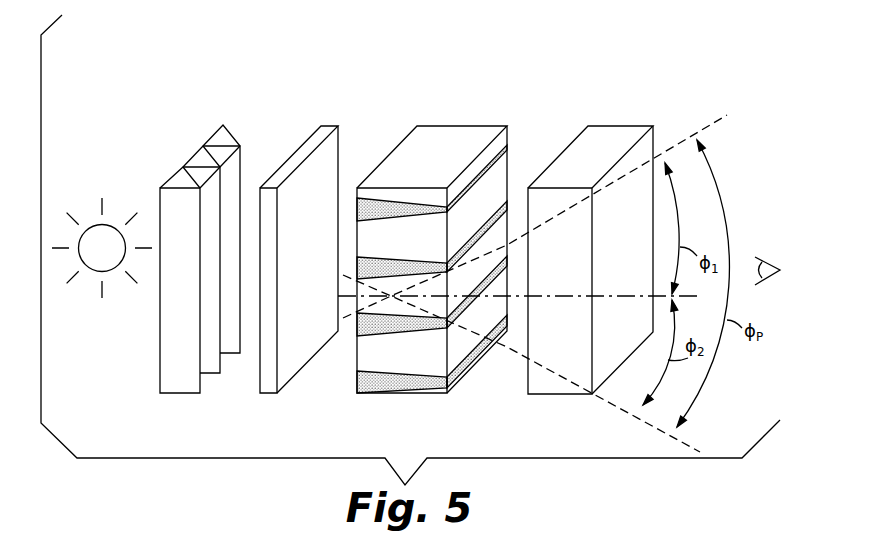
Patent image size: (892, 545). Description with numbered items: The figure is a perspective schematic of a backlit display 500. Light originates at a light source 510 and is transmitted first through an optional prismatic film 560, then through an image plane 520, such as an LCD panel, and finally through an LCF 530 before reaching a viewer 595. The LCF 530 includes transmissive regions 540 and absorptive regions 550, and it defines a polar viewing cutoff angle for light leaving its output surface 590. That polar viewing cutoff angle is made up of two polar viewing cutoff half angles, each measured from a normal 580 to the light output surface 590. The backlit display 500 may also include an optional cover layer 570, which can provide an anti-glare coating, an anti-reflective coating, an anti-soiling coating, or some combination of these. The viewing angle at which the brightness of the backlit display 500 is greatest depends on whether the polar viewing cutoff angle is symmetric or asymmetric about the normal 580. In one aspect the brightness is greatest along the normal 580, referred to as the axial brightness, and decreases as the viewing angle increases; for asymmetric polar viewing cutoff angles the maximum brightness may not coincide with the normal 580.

The backlit display 500 is at (235, 67).
The light source 510 is at (98, 238).
The prismatic film 560 is at (217, 137).
The image plane 520 is at (312, 143).
The LCF 530 is at (452, 265).
The transmissive regions 540 is at (417, 362).
The absorptive regions 550 is at (382, 333).
The output surface 590 is at (500, 181).
The cover layer 570 is at (590, 260).
The normal 580 is at (557, 297).
The viewer 595 is at (768, 257).